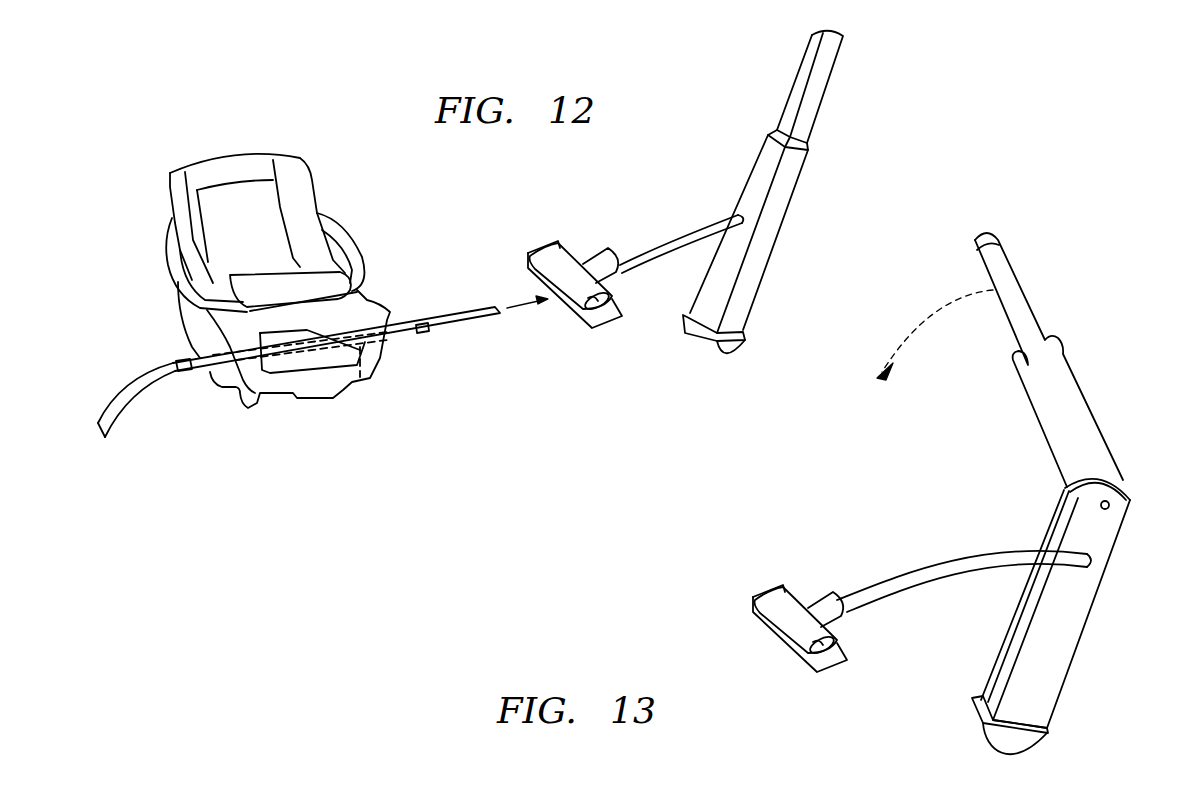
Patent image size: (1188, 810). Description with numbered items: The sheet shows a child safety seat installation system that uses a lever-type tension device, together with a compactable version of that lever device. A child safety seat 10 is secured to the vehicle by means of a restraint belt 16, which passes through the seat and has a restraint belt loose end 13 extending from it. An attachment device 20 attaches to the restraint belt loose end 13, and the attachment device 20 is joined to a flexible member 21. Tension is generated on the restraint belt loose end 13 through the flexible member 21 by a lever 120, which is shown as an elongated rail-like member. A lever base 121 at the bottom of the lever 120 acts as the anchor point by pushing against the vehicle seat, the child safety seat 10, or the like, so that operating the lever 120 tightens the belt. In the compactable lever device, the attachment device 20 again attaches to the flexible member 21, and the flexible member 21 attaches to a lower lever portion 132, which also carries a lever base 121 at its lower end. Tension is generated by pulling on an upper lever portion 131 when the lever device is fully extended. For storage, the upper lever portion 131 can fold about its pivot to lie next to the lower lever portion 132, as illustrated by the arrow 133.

In FIG. 12, the child safety seat 10 is at (233, 162).
In FIG. 12, the restraint belt loose end 13 is at (470, 325).
In FIG. 12, the restraint belt 16 is at (138, 387).
In FIG. 12, the attachment device 20 is at (545, 248).
In FIG. 13, the attachment device 20 is at (768, 590).
In FIG. 12, the flexible member 21 is at (658, 248).
In FIG. 13, the flexible member 21 is at (902, 596).
In FIG. 12, the lever 120 is at (790, 178).
In FIG. 12, the lever base 121 is at (735, 348).
In FIG. 13, the lever base 121 is at (1020, 746).
In FIG. 13, the upper lever portion 131 is at (1080, 418).
In FIG. 13, the lower lever portion 132 is at (1060, 633).
In FIG. 13, the arrow 133 is at (940, 318).